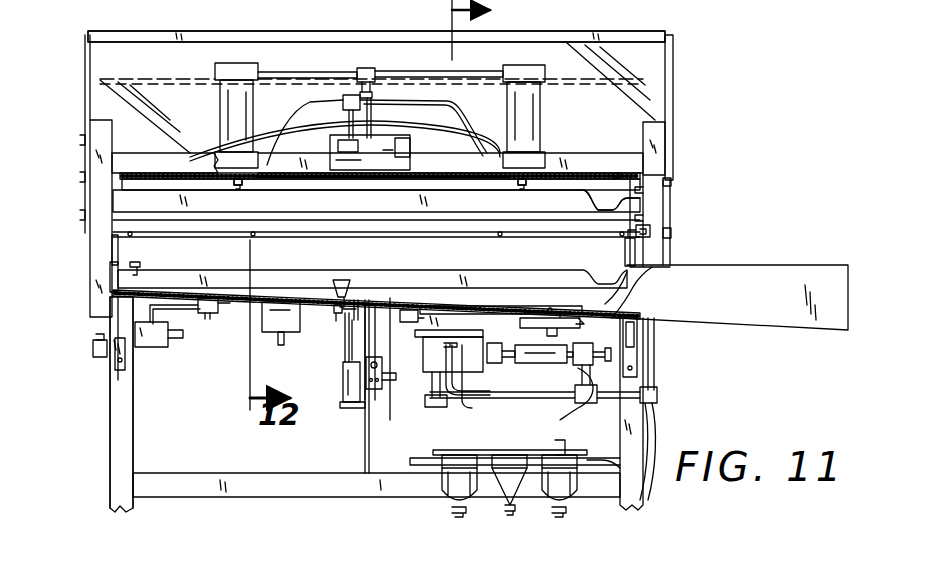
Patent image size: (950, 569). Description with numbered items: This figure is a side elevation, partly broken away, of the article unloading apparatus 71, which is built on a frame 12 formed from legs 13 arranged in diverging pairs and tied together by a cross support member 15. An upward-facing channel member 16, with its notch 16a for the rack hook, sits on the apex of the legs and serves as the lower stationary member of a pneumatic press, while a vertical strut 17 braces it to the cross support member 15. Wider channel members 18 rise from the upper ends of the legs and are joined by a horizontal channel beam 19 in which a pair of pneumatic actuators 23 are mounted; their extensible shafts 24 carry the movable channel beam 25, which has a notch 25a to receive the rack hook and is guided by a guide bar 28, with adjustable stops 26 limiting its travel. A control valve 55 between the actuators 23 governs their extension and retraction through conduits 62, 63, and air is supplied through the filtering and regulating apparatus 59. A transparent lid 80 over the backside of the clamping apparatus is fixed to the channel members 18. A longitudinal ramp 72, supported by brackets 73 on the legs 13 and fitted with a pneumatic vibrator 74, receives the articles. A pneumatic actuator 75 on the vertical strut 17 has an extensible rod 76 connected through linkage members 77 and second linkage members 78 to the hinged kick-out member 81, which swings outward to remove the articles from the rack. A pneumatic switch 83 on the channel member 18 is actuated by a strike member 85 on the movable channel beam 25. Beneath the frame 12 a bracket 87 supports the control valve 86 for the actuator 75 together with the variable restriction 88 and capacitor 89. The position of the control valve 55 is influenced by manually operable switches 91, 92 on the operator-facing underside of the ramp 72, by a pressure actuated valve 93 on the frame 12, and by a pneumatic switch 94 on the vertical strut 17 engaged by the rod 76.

The frame 12 is at (100, 426).
The legs 13 is at (110, 461).
The cross support member 15 is at (199, 484).
The channel member 16 is at (428, 287).
The notch 16a is at (636, 291).
The vertical strut 17 is at (365, 452).
The channel member 18 is at (98, 135).
The channel beam 19 is at (589, 160).
The pneumatic piston-cylinder actuators 23 is at (222, 103).
The extensible shaft 24 is at (238, 183).
The channel beam 25 is at (123, 204).
The notch 25a is at (652, 216).
The adjustable stops 26 is at (138, 266).
The guide bar 28 is at (117, 246).
The control valve 55 is at (388, 138).
The filtering and regulating apparatus 59 is at (466, 452).
The pneumatic conduit 62 is at (446, 104).
The pneumatic conduit 63 is at (406, 76).
The article unloading apparatus 71 is at (710, 74).
The longitudinal ramp 72 is at (760, 270).
The brackets 73 is at (120, 348).
The pneumatic vibrator 74 is at (284, 334).
The pneumatic actuator 75 is at (347, 381).
The extensible rod 76 is at (347, 342).
The linkage members 77 is at (350, 318).
The second linkage member 78 is at (345, 280).
The transparent lid 80 is at (680, 56).
The kick-out member 81 is at (276, 280).
The pneumatic switch 83 is at (672, 236).
The strike member 85 is at (673, 181).
The control valve 86 is at (478, 368).
The bracket 87 is at (495, 336).
The variable restriction 88 is at (576, 370).
The capacitor 89 is at (540, 366).
The pneumatic switch 91 is at (213, 314).
The pneumatic switch 92 is at (566, 317).
The pressure actuated valve 93 is at (163, 350).
The pneumatic switch 94 is at (383, 300).